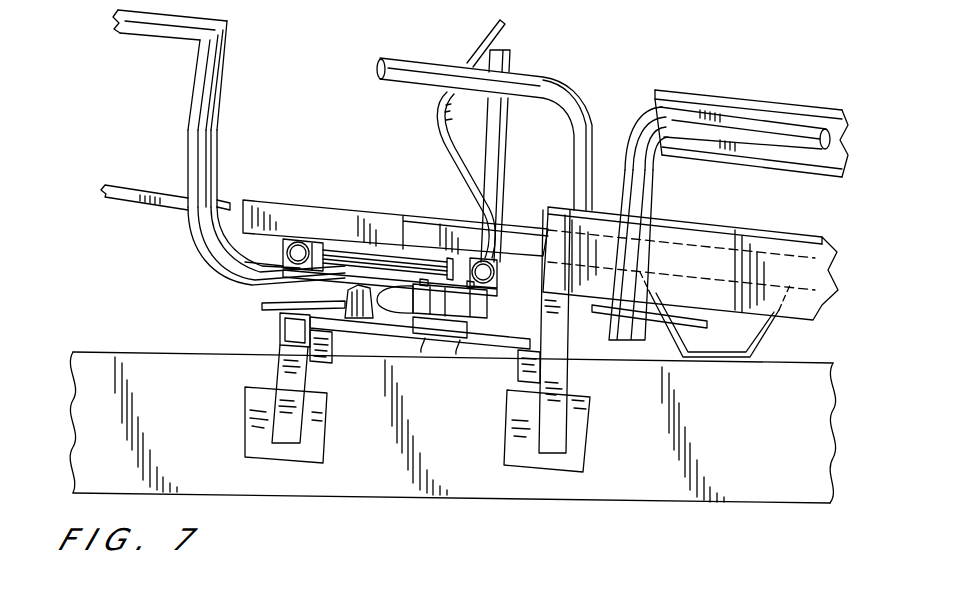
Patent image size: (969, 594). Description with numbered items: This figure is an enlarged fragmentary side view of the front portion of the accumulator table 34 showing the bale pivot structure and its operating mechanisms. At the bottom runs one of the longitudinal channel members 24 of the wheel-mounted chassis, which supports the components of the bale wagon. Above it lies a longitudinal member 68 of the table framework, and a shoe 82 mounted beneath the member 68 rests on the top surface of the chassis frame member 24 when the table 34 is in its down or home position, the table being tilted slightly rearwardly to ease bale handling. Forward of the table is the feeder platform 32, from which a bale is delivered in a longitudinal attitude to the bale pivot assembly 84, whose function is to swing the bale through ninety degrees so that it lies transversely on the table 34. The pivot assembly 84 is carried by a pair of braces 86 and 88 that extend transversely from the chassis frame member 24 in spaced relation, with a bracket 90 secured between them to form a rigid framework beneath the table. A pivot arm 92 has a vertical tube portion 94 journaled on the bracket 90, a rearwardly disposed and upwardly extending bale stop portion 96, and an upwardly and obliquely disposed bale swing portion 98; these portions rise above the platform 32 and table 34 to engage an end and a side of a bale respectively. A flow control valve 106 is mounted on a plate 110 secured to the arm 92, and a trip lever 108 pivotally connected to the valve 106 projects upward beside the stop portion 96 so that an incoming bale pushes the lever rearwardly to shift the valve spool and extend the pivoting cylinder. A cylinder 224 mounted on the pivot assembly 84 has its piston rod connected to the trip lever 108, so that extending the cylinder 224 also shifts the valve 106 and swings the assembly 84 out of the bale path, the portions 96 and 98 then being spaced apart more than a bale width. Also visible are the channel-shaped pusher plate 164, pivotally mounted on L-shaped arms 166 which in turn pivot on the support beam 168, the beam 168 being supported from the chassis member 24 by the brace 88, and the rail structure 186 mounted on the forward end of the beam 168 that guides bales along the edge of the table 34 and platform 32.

The longitudinal channel member 24 is at (370, 475).
The feeder platform 32 is at (139, 190).
The accumulator table 34 is at (287, 203).
The longitudinal member 68 is at (829, 277).
The shoe 82 is at (765, 333).
The bale pivot assembly 84 is at (210, 273).
The brace 86 is at (277, 370).
The brace 88 is at (566, 372).
The bracket 90 is at (366, 327).
The pivot arm 92 is at (196, 227).
The vertical tube portion 94 is at (290, 305).
The bale stop portion 96 is at (516, 113).
The bale swing portion 98 is at (213, 57).
The flow control valve 106 is at (482, 320).
The trip lever 108 is at (437, 107).
The plate 110 is at (293, 283).
The pusher plate 164 is at (769, 91).
The L-shaped arm 166 is at (641, 184).
The support beam 168 is at (724, 232).
The rail structure 186 is at (546, 90).
The cylinder 224 is at (388, 250).